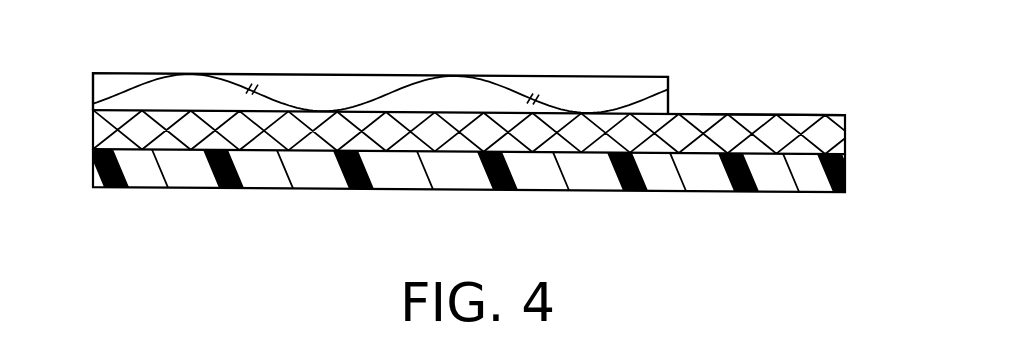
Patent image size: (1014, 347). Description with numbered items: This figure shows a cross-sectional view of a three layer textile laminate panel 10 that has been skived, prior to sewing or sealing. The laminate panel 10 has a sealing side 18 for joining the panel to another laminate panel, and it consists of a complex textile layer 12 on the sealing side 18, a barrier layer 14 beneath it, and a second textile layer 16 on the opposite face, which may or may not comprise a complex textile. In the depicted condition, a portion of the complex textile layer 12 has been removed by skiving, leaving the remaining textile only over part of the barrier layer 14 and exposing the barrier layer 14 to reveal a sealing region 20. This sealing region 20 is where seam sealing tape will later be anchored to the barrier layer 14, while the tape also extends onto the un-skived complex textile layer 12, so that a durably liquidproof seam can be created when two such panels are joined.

The textile laminate panel 10 is at (75, 142).
The complex textile layer 12 is at (415, 62).
The barrier layer 14 is at (838, 131).
The second textile layer 16 is at (822, 177).
The sealing side 18 is at (323, 73).
The sealing region 20 is at (765, 113).